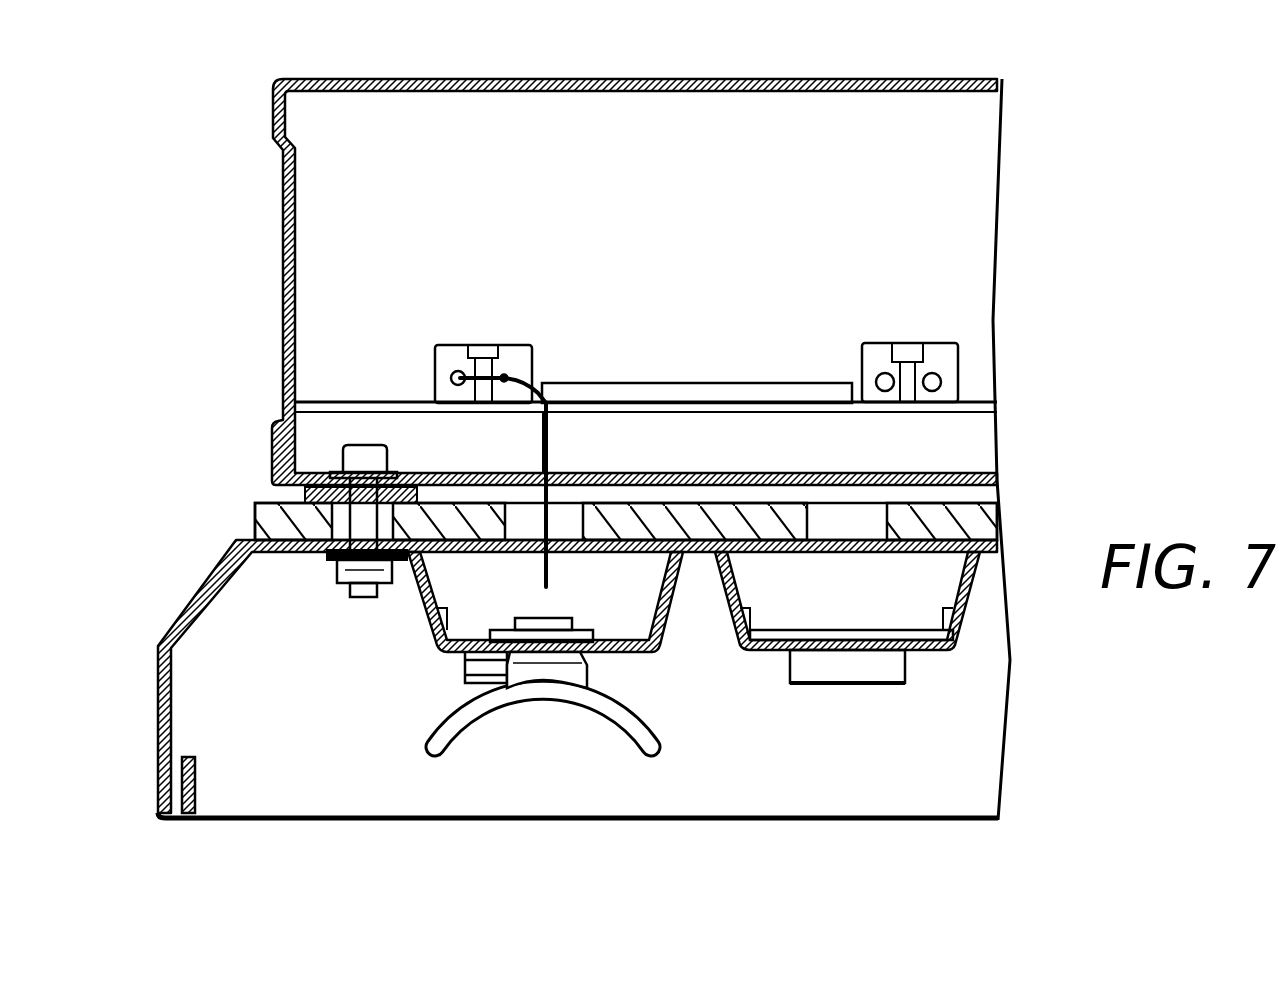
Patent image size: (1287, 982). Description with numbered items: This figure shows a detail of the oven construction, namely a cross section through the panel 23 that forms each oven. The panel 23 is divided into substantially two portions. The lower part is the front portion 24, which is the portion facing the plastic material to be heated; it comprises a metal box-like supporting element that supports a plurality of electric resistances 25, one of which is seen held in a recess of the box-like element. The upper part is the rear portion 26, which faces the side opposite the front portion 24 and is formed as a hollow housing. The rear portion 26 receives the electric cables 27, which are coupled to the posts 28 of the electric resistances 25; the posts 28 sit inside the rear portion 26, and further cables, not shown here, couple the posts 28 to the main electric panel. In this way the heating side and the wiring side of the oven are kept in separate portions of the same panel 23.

The panel 23 is at (1130, 252).
The front portion 24 is at (900, 800).
The electric resistances 25 is at (628, 742).
The rear portion 26 is at (975, 212).
The electric cables 27 is at (582, 437).
The posts 28 is at (447, 355).